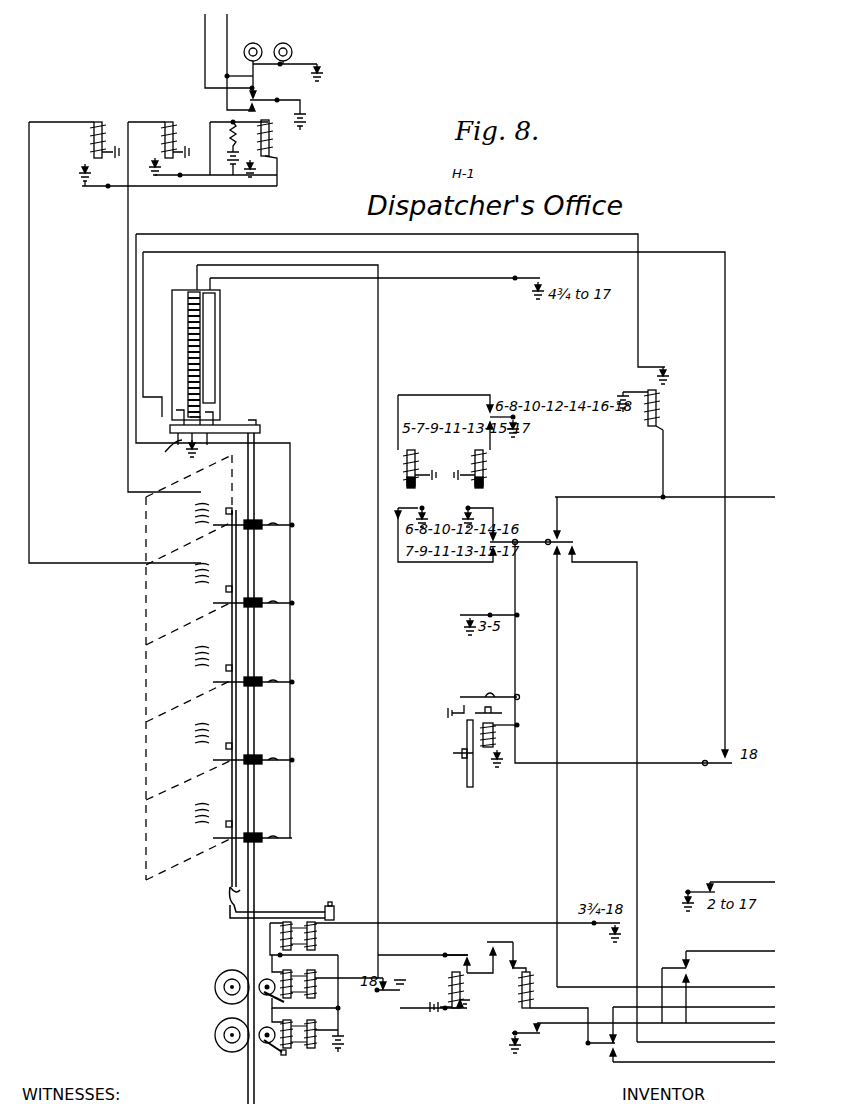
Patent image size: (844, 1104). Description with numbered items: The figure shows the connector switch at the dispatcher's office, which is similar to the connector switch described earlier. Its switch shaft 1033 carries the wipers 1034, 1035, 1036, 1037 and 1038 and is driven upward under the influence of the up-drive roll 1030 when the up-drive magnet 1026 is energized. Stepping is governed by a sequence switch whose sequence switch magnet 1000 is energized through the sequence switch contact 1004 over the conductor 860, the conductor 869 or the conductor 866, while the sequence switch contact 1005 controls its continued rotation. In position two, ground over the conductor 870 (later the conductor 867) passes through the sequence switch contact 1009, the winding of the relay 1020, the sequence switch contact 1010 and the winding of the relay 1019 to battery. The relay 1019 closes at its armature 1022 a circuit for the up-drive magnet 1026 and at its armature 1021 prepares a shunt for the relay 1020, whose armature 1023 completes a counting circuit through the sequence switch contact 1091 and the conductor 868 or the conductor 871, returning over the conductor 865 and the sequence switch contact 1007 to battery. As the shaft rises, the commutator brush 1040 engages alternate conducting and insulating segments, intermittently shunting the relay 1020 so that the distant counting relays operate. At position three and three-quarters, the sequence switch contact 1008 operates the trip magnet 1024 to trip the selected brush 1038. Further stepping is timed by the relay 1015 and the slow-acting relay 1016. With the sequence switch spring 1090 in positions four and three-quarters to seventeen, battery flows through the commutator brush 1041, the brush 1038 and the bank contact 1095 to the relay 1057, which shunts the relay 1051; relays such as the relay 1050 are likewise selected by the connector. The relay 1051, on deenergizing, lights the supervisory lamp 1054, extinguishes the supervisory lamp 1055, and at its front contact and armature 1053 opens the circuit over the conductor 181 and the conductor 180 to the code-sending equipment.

The conductor 180 is at (205, 22).
The conductor 181 is at (227, 44).
The supervisory signalling lamp 1054 is at (272, 40).
The supervisory signalling lamp 1055 is at (292, 51).
The front contact and armature 1053 is at (284, 93).
The relay 1050 is at (100, 114).
The relay 1057 is at (166, 122).
The relay 1051 is at (272, 148).
The sequence switch spring 1090 is at (534, 278).
The commutator brush 1041 is at (210, 385).
The commutator brush 1040 is at (178, 448).
The bank contact 1095 is at (195, 500).
The wiper brush 1038 is at (246, 523).
The wiper 1037 is at (246, 601).
The wiper 1036 is at (246, 680).
The wiper 1035 is at (246, 758).
The wiper 1034 is at (246, 836).
The switch shaft 1033 is at (256, 877).
The relay 1015 is at (416, 468).
The slow-acting relay 1016 is at (485, 468).
The sequence switch contact 1004 is at (566, 544).
The conductor 860 is at (758, 498).
The sequence switch contact 1005 is at (490, 614).
The sequence switch magnet 1000 is at (486, 768).
The conductor 865 is at (758, 876).
The sequence switch contact 1007 is at (697, 890).
The conductor 871 is at (730, 952).
The conductor 866 is at (666, 979).
The conductor 867 is at (694, 999).
The conductor 868 is at (656, 1018).
The conductor 869 is at (706, 1036).
The conductor 870 is at (768, 1062).
The sequence switch contact 1091 is at (662, 967).
The sequence switch contact 1008 is at (600, 926).
The sequence switch contact 1010 is at (483, 932).
The trip magnet 1024 is at (316, 942).
The up-drive magnet 1026 is at (316, 1045).
The up-drive roll 1030 is at (216, 1035).
The armature 1021 is at (467, 955).
The relay 1019 is at (452, 990).
The relay 1020 is at (520, 996).
The armature 1022 is at (460, 1012).
The armature 1023 is at (533, 1036).
The sequence switch contact 1009 is at (592, 1048).